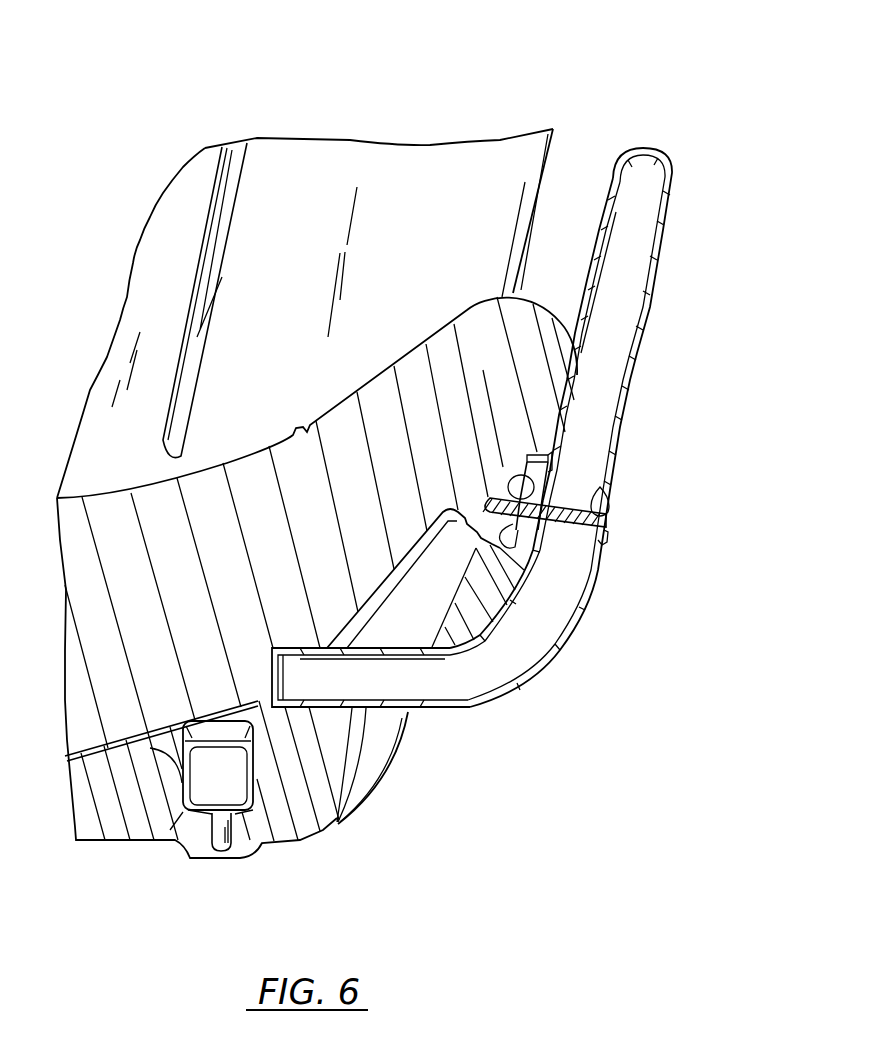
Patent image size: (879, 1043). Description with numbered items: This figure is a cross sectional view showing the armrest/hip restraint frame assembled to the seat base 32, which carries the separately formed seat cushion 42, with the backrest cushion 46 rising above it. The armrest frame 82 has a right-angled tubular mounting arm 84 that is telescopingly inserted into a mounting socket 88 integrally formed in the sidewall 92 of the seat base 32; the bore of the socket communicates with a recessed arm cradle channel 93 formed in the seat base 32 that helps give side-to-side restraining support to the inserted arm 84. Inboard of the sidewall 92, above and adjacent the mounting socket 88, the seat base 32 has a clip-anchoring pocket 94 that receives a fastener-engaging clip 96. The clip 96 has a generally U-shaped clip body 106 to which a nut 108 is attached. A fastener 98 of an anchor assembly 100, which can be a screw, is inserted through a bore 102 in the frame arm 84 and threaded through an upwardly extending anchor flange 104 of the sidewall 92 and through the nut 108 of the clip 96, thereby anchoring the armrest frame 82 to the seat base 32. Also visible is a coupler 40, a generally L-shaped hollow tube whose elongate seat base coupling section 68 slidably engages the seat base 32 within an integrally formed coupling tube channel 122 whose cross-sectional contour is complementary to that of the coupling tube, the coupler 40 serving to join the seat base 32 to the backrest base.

The seat base 32 is at (356, 832).
The coupler 40 is at (176, 790).
The seat cushion 42 is at (522, 293).
The backrest cushion 46 is at (513, 157).
The seat base coupling section 68 is at (183, 813).
The armrest frame 82 is at (674, 239).
The mounting arm 84 is at (447, 710).
The mounting socket 88 is at (425, 723).
The sidewall 92 is at (378, 760).
The arm cradle channel 93 is at (440, 615).
The clip-anchoring pocket 94 is at (480, 550).
The fastener-engaging clip 96 is at (539, 440).
The fastener 98 is at (621, 537).
The anchor assembly 100 is at (622, 518).
The bore 102 is at (612, 486).
The anchor flange 104 is at (537, 488).
The clip body 106 is at (548, 448).
The nut 108 is at (483, 370).
The coupling tube channel 122 is at (232, 848).